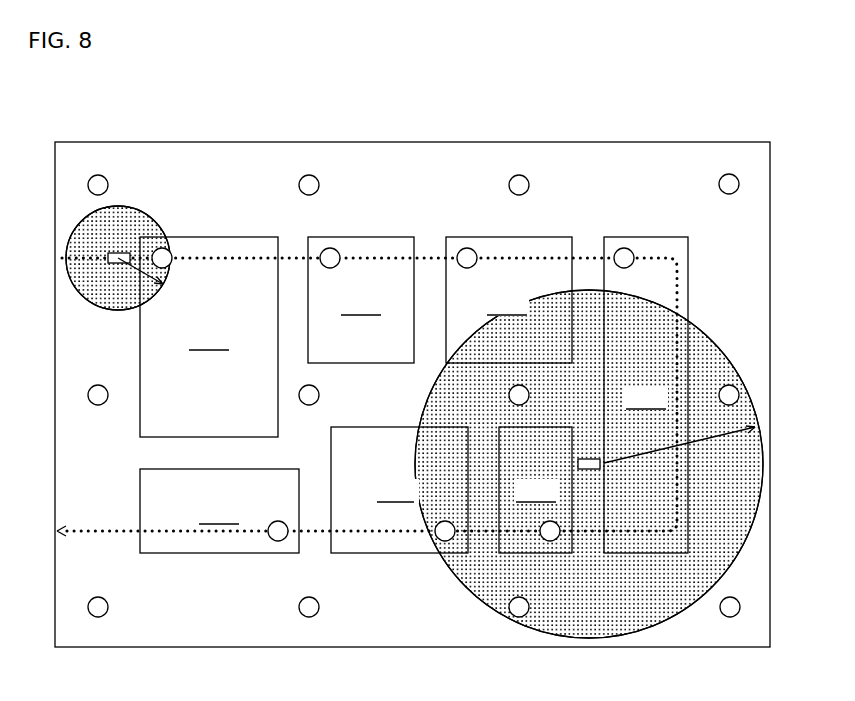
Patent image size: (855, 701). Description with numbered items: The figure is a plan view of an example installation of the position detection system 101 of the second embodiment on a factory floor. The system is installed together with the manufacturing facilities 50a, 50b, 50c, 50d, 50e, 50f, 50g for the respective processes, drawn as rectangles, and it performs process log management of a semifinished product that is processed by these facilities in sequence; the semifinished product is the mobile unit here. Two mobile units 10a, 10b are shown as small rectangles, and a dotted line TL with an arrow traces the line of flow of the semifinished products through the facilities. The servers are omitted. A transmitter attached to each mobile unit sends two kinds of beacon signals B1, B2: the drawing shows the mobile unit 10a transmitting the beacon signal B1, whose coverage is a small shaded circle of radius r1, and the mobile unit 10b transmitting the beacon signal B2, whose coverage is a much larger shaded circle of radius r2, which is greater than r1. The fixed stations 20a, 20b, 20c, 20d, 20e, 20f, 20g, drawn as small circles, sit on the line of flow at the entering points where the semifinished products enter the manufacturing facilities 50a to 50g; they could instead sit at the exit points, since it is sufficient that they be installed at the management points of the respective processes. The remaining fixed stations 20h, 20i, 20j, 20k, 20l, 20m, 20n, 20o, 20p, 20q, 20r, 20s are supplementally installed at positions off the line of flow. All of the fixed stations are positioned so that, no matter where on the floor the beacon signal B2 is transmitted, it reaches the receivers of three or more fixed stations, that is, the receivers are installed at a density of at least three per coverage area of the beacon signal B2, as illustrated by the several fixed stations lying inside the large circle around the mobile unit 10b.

The position detection system 101 is at (549, 120).
The mobile unit 10a is at (110, 253).
The mobile unit 10b is at (590, 459).
The beacon signal B1 is at (100, 296).
The beacon signal B2 is at (718, 538).
The radius r1 is at (140, 285).
The radius r2 is at (679, 451).
The travel line TL is at (110, 531).
The manufacturing facility 50a is at (209, 337).
The manufacturing facility 50b is at (361, 300).
The manufacturing facility 50c is at (509, 300).
The manufacturing facility 50d is at (646, 395).
The manufacturing facility 50e is at (535, 490).
The manufacturing facility 50f is at (399, 490).
The manufacturing facility 50g is at (219, 511).
The fixed station 20a is at (169, 251).
The fixed station 20b is at (323, 251).
The fixed station 20c is at (475, 251).
The fixed station 20d is at (631, 251).
The fixed station 20e is at (556, 540).
The fixed station 20f is at (439, 540).
The fixed station 20g is at (284, 540).
The fixed station 20h is at (106, 178).
The fixed station 20i is at (317, 178).
The fixed station 20j is at (511, 179).
The fixed station 20k is at (720, 178).
The fixed station 20l is at (90, 388).
The fixed station 20m is at (318, 390).
The fixed station 20n is at (510, 390).
The fixed station 20o is at (746, 378).
The fixed station 20p is at (106, 613).
The fixed station 20q is at (317, 613).
The fixed station 20r is at (511, 613).
The fixed station 20s is at (722, 613).